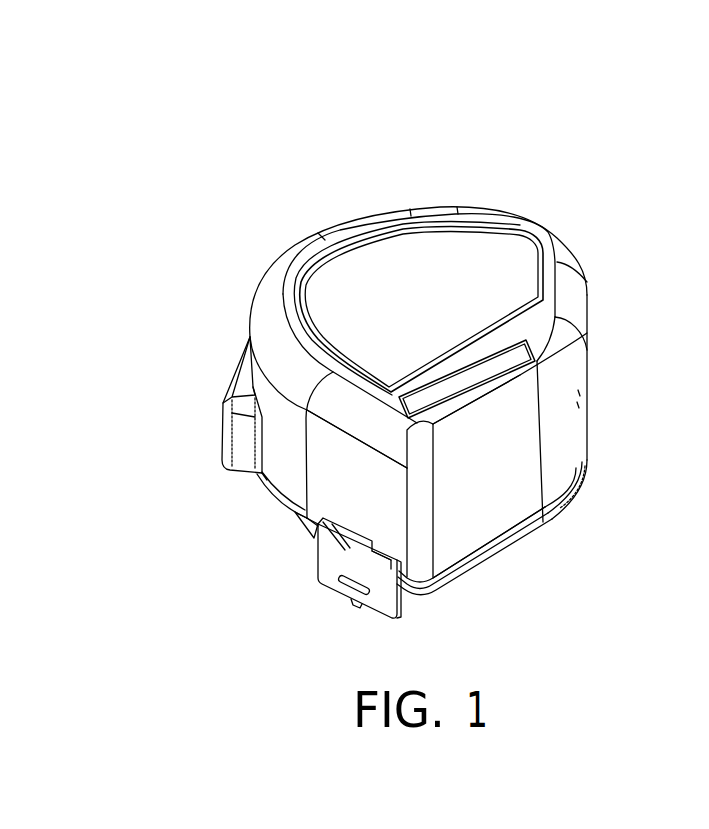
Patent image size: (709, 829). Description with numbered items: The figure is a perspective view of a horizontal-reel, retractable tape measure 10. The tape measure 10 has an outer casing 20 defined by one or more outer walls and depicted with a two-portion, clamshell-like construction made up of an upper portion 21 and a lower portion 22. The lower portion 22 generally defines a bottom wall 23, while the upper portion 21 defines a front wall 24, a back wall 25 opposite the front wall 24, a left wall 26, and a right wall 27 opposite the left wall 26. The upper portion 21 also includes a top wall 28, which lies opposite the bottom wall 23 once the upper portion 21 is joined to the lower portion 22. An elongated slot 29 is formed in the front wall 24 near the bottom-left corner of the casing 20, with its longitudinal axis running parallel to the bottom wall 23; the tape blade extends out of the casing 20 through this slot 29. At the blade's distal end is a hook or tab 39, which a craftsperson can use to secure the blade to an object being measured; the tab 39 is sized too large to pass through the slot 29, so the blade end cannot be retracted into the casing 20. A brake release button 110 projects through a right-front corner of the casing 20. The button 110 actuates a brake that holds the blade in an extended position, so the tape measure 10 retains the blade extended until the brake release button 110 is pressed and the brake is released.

The tape measure 10 is at (226, 143).
The casing 20 is at (606, 172).
The upper portion 21 is at (614, 415).
The lower portion 22 is at (612, 489).
The bottom wall 23 is at (496, 575).
The front wall 24 is at (371, 495).
The back wall 25 is at (565, 236).
The left wall 26 is at (501, 488).
The right wall 27 is at (287, 244).
The top wall 28 is at (424, 296).
The slot 29 is at (346, 556).
The tab 39 is at (378, 597).
The brake release button 110 is at (234, 383).